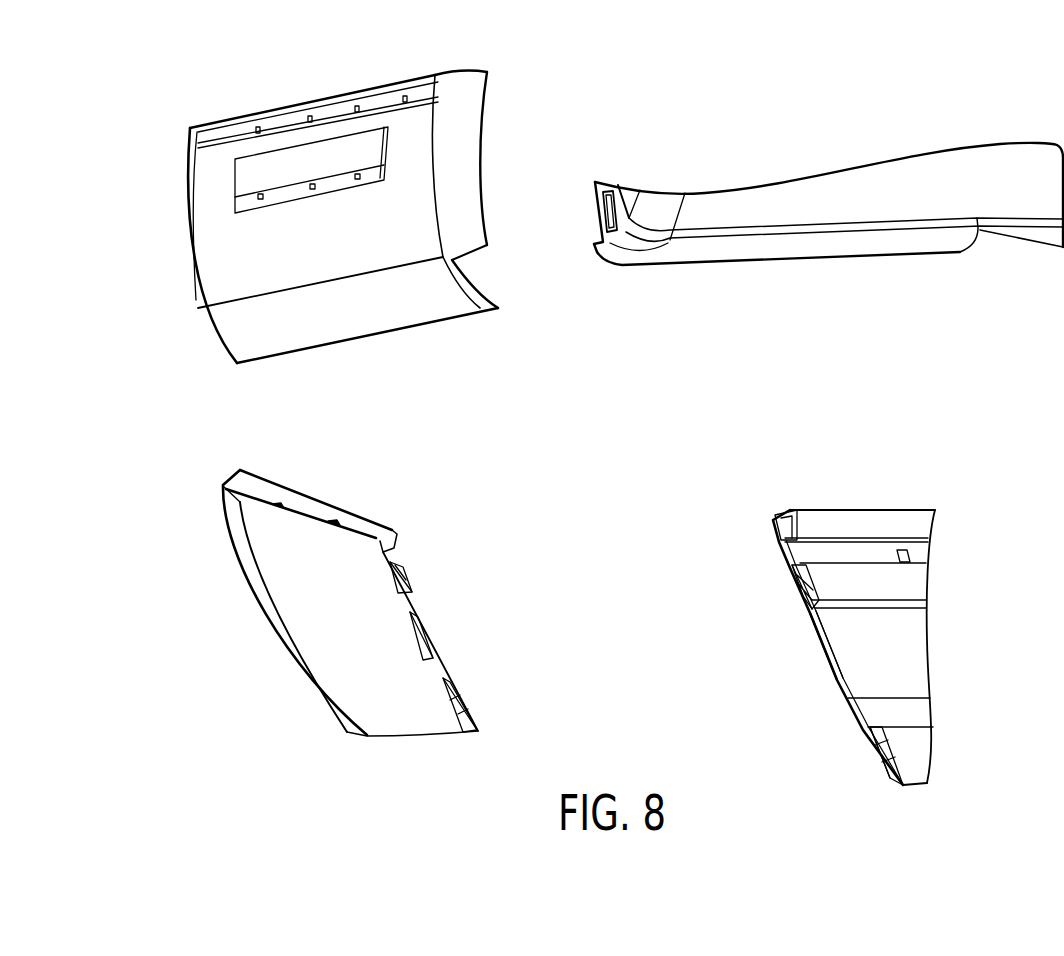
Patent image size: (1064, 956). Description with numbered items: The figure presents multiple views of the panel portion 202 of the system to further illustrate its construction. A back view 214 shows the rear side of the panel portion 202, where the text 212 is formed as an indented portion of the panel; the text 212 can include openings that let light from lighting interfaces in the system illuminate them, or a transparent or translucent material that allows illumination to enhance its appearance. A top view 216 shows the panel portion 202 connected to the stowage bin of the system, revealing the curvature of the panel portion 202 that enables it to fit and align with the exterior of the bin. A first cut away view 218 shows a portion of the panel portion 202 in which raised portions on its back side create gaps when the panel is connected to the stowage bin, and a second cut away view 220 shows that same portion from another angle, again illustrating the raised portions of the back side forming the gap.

The panel portion 202 is at (565, 416).
The text 212 is at (349, 140).
The back view 214 is at (310, 186).
The top view 216 is at (742, 152).
The first cut away view 218 is at (361, 571).
The second cut away view 220 is at (815, 599).